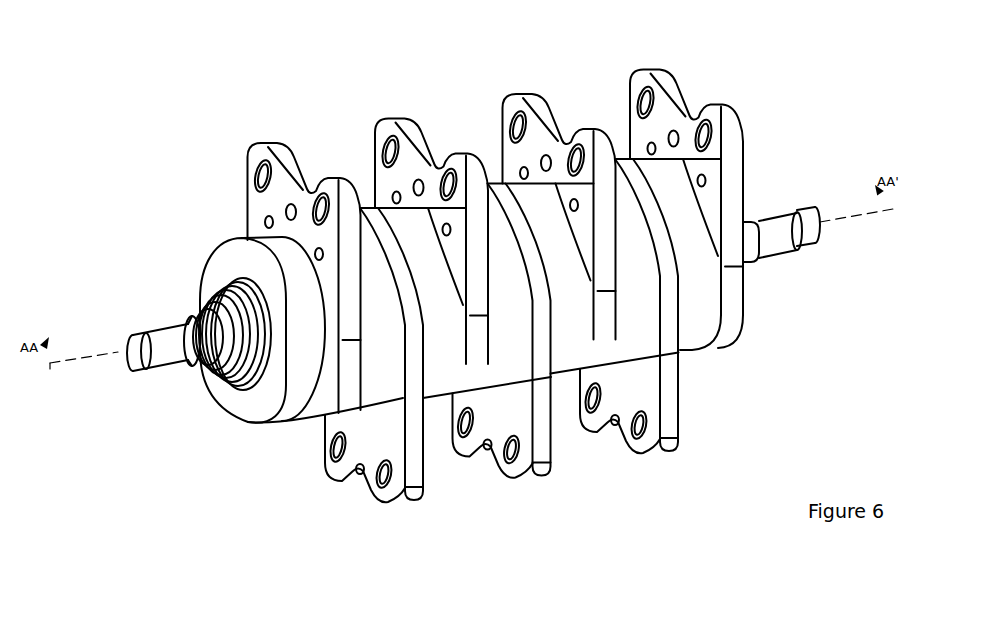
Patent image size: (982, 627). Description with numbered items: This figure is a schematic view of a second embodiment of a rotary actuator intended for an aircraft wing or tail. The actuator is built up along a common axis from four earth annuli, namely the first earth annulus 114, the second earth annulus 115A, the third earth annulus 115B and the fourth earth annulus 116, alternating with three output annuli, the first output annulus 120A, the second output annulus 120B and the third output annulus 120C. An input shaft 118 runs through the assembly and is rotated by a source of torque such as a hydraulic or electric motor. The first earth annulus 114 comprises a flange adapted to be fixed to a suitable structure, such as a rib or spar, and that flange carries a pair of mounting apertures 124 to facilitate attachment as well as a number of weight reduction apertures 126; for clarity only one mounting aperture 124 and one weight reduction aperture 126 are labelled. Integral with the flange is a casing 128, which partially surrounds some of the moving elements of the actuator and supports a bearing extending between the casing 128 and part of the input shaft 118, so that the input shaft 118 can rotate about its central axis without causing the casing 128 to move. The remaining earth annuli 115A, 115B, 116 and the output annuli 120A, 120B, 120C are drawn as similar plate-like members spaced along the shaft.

The first earth annulus 114 is at (440, 298).
The second earth annulus 115A is at (342, 117).
The third earth annulus 115B is at (475, 82).
The fourth earth annulus 116 is at (616, 53).
The input shaft 118 is at (173, 348).
The first output annulus 120A is at (350, 518).
The second output annulus 120B is at (521, 512).
The third output annulus 120C is at (674, 510).
The mounting aperture 124 is at (246, 176).
The weight reduction aperture 126 is at (266, 221).
The casing 128 is at (228, 266).